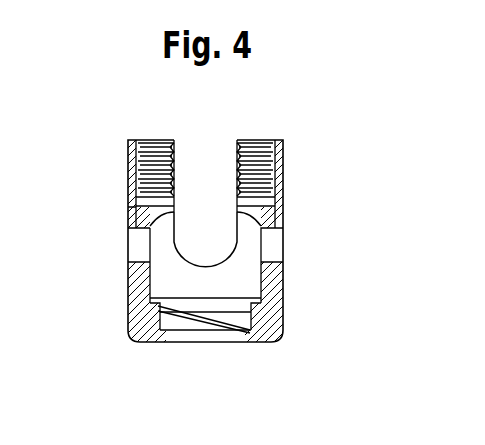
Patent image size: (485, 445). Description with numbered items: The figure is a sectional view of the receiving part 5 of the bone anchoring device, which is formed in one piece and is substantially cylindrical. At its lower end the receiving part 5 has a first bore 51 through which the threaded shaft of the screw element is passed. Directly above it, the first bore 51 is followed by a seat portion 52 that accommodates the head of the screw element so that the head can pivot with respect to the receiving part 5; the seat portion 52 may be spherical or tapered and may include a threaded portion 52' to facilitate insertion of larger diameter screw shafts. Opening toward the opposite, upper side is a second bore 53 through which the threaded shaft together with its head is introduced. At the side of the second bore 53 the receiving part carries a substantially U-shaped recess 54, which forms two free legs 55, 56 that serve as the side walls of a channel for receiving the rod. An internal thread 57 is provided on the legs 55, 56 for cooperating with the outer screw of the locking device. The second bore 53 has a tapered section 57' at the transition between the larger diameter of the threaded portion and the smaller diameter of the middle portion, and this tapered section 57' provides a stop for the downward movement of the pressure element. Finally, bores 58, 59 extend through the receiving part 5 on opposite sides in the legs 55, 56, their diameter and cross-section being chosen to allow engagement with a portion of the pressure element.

The receiving part 5 is at (293, 196).
The first bore 51 is at (247, 334).
The seat portion 52 is at (253, 313).
The threaded portion 52' is at (189, 345).
The second bore 53 is at (142, 186).
The U-shaped recess 54 is at (177, 256).
The first leg 55 is at (129, 154).
The second leg 56 is at (283, 153).
The internal thread 57 is at (205, 141).
The tapered section 57' is at (205, 215).
The bore in first leg 58 is at (128, 237).
The bore in second leg 59 is at (283, 239).